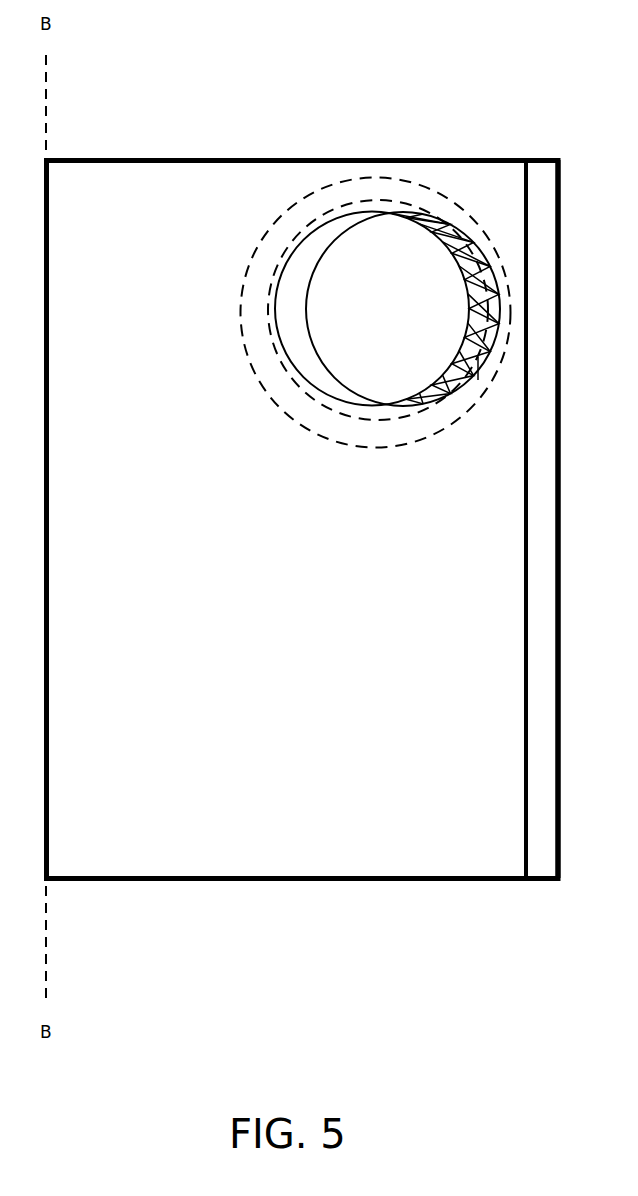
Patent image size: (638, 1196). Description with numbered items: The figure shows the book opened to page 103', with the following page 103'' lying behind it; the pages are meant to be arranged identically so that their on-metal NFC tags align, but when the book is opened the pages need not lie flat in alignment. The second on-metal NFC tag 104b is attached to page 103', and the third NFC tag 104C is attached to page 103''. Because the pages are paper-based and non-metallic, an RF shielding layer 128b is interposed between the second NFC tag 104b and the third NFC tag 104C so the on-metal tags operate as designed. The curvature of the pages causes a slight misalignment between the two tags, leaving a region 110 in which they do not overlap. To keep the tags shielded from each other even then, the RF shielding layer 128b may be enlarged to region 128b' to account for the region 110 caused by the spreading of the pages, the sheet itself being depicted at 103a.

The plate 103a is at (112, 205).
The page 103' is at (287, 143).
The page 103'' is at (530, 480).
The enlarged region of RF shielding layer 128b' is at (316, 313).
The RF shielding layer 128b is at (304, 309).
The second on-metal NFC tag 104b is at (340, 404).
The third NFC tag 104C is at (435, 402).
The region 110 is at (478, 357).